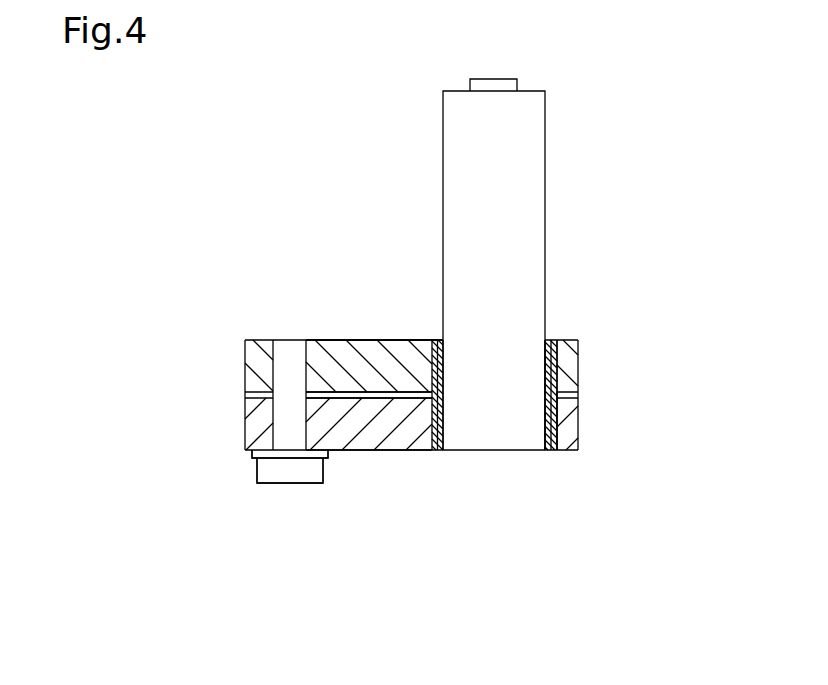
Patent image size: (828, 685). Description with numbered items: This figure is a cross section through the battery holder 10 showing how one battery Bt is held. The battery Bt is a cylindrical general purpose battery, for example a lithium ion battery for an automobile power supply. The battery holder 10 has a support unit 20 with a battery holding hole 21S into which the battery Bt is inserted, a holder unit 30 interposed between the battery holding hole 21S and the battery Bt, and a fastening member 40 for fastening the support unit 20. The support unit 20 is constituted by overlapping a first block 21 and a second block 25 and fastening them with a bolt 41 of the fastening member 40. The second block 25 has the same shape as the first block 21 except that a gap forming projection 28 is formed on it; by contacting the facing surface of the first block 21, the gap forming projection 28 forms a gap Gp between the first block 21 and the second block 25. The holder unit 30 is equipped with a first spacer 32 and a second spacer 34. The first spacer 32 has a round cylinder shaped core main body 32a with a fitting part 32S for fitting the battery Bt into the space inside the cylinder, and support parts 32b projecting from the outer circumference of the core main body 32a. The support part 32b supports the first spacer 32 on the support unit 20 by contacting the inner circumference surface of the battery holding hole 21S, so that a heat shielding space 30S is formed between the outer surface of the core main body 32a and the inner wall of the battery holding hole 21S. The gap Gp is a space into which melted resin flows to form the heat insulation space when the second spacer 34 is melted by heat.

The battery holder 10 is at (188, 190).
The support unit 20 is at (133, 368).
The first block 21 is at (245, 387).
The second block 25 is at (245, 435).
The gap forming projection 28 is at (254, 392).
The battery holding hole 21S is at (543, 423).
The gap Gp is at (358, 398).
The holder unit 30 is at (465, 518).
The second spacer 34 is at (410, 435).
The first spacer 32 is at (440, 430).
The core main body 32a is at (558, 352).
The support part 32b is at (558, 380).
The fitting part 32S is at (444, 352).
The heat shielding space 30S is at (440, 338).
The bolt 41 is at (278, 485).
The fastening member 40 is at (290, 466).
The battery Bt is at (545, 185).